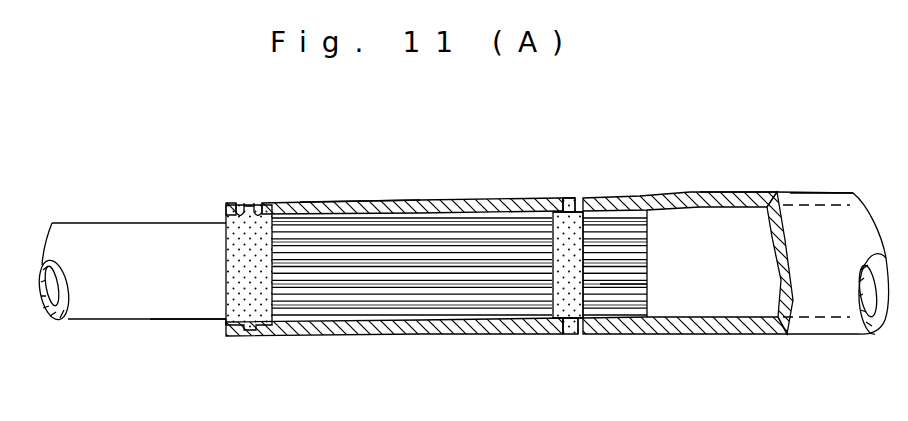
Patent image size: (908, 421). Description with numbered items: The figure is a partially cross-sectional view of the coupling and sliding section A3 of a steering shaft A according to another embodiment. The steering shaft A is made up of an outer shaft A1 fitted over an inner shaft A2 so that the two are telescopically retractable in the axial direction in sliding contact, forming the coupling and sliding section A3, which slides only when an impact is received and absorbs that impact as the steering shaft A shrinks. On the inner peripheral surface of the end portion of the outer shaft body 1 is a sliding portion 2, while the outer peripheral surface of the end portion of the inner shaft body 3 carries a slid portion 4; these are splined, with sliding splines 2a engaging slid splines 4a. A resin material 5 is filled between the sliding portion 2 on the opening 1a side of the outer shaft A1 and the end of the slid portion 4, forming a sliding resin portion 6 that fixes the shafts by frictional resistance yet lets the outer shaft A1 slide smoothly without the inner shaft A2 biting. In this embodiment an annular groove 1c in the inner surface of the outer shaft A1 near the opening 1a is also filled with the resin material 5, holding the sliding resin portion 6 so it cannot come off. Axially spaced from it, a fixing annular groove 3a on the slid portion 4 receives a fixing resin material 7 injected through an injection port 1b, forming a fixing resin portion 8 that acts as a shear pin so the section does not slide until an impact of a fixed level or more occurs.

The outer shaft body 1 is at (757, 335).
The opening 1a is at (223, 322).
The injection port 1b is at (570, 200).
The annular groove 1c is at (236, 203).
The sliding portion 2 is at (648, 302).
The sliding splines 2a is at (633, 288).
The inner shaft body 3 is at (200, 320).
The fixing annular groove 3a is at (567, 333).
The slid portion 4 is at (316, 302).
The slid splines 4a is at (364, 287).
The resin material 5 is at (240, 263).
The sliding resin portion 6 is at (256, 206).
The fixing resin material 7 is at (582, 334).
The fixing resin portion 8 is at (559, 222).
The steering shaft A is at (734, 190).
The outer shaft A1 is at (812, 190).
The inner shaft A2 is at (180, 305).
The coupling and sliding section A3 is at (366, 200).